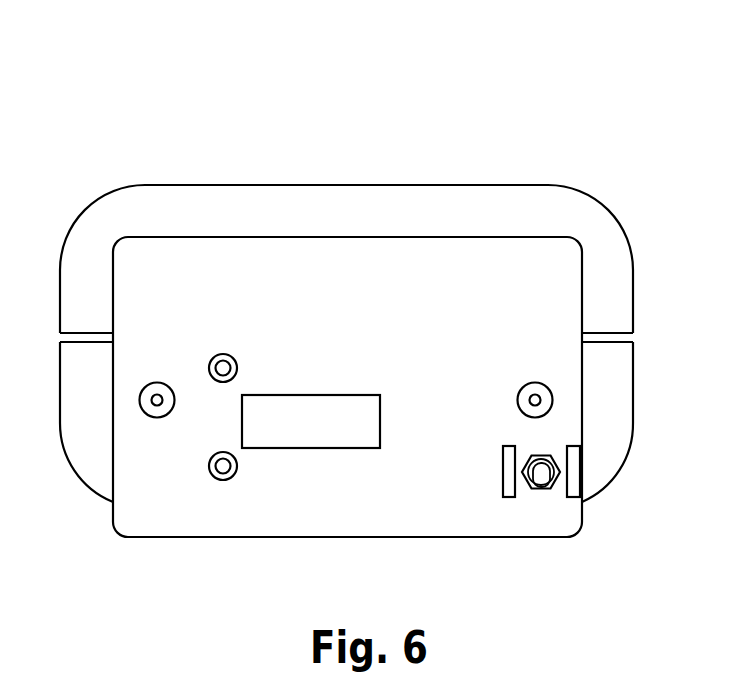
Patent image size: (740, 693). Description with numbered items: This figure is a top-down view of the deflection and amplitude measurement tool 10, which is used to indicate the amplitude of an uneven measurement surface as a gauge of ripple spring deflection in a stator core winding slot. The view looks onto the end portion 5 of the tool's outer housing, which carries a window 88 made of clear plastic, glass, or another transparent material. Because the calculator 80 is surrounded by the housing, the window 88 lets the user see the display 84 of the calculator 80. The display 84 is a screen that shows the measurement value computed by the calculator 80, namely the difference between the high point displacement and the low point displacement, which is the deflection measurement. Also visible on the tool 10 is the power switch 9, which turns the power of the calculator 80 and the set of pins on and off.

The deflection and amplitude measurement tool 10 is at (167, 73).
The end portion 5 is at (563, 205).
The calculator 80 is at (113, 528).
The window 88 is at (143, 263).
The display 84 is at (373, 433).
The power switch 9 is at (545, 477).